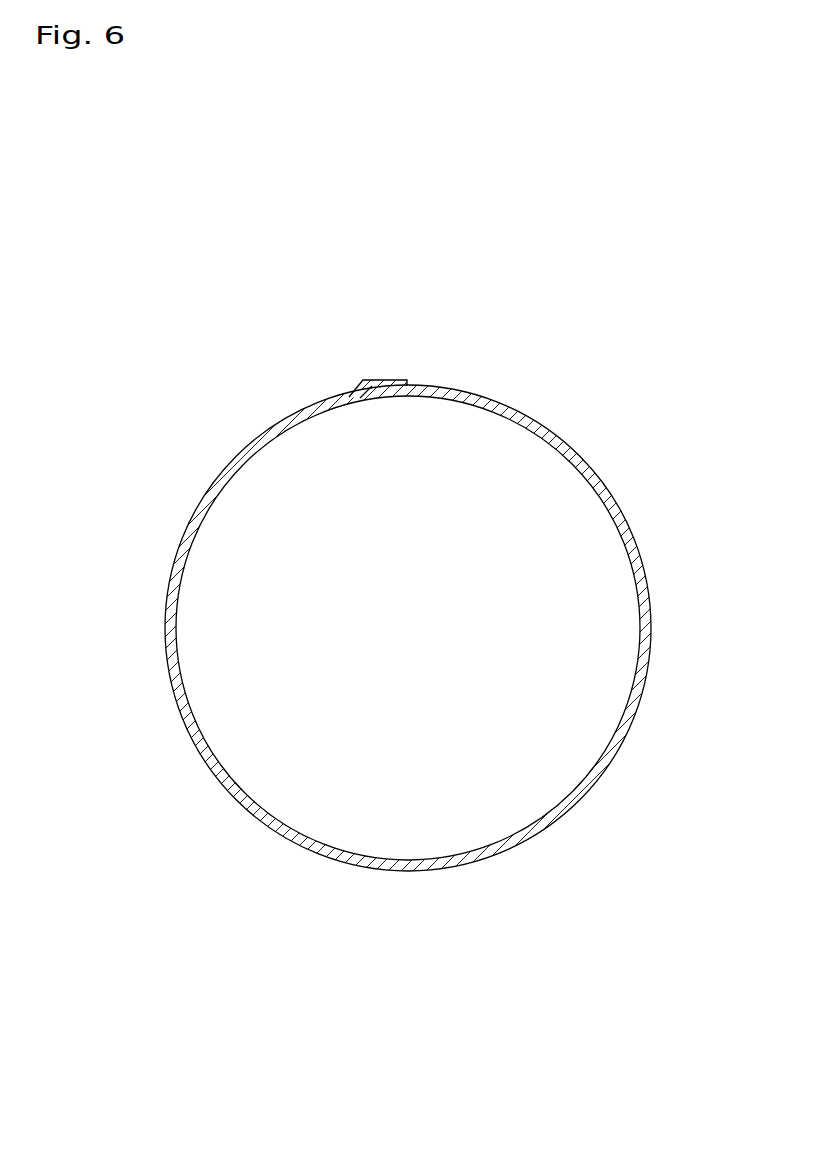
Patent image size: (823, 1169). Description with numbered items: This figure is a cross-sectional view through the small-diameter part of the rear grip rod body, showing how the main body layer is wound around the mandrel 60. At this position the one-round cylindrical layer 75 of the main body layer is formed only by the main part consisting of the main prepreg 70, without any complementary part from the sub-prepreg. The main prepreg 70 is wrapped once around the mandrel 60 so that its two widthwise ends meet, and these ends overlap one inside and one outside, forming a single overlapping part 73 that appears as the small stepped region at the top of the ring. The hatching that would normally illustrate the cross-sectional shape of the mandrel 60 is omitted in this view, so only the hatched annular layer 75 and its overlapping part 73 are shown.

The mandrel 60 is at (340, 830).
The main prepreg 70 is at (578, 457).
The overlapping part 73 is at (386, 378).
The one-round cylindrical layer 75 is at (203, 484).